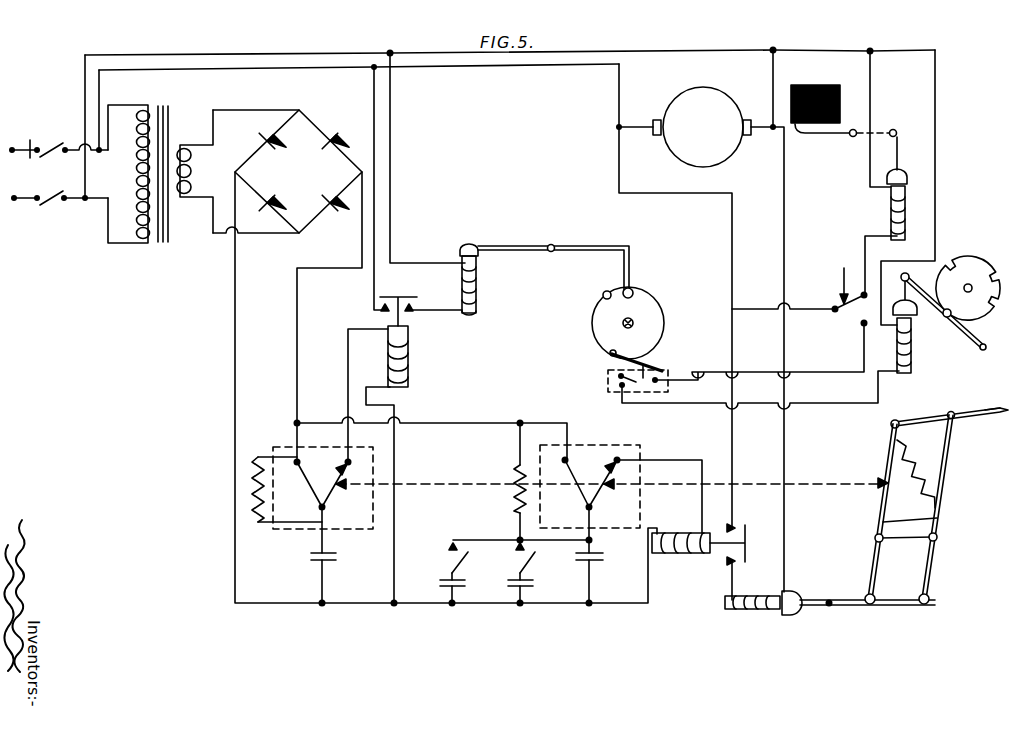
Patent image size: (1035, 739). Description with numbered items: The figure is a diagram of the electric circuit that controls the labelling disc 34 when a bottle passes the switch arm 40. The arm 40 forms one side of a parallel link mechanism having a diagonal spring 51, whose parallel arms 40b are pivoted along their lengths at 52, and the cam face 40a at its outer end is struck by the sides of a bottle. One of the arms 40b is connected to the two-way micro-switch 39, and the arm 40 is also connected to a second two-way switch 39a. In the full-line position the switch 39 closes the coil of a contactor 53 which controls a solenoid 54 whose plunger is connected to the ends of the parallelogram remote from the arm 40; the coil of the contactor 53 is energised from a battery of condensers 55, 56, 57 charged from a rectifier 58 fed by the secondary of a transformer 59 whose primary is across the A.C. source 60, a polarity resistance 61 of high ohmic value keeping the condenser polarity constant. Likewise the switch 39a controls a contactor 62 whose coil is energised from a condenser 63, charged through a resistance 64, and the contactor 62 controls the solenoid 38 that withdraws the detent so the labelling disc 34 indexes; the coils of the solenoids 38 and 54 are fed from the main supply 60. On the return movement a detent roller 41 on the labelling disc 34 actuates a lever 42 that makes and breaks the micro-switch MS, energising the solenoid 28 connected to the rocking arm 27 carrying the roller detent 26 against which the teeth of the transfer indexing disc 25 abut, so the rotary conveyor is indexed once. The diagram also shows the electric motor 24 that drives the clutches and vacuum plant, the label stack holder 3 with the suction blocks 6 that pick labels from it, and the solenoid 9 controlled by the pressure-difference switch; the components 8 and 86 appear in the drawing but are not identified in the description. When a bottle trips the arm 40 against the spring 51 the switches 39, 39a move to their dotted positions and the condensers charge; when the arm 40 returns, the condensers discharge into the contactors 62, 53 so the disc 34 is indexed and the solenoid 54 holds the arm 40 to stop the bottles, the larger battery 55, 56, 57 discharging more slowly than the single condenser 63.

The label stack holder 3 is at (840, 105).
The suction block 6 is at (818, 128).
The switch 8 is at (850, 318).
The solenoid 9 is at (886, 197).
The electric motor 24 is at (690, 137).
The transfer indexing disc 25 is at (971, 263).
The roller detent 26 is at (948, 318).
The rocking arm 27 is at (927, 302).
The solenoid 28 is at (912, 345).
The labelling disc 34 is at (657, 344).
The solenoid 38 is at (478, 290).
The micro-switch 39 is at (580, 448).
The two-way switch 39a is at (297, 528).
The switch arm 40 is at (917, 421).
The cam face 40a is at (992, 401).
The parallel arms 40b is at (939, 519).
The detent roller 41 is at (604, 294).
The lever 42 is at (612, 357).
The micro-switch MS is at (612, 386).
The diagonal spring 51 is at (918, 475).
The pivot 52 is at (935, 540).
The contactor 53 is at (747, 541).
The solenoid 54 is at (767, 609).
The condenser 55 is at (447, 588).
The condenser 56 is at (512, 590).
The condenser 57 is at (582, 564).
The rectifier 58 is at (338, 183).
The transformer 59 is at (169, 107).
The A.C. source 60 is at (27, 141).
The polarity resistance 61 is at (516, 485).
The contactor 62 is at (402, 292).
The condenser 63 is at (314, 562).
The resistance 64 is at (257, 494).
The pivot 86 is at (636, 293).